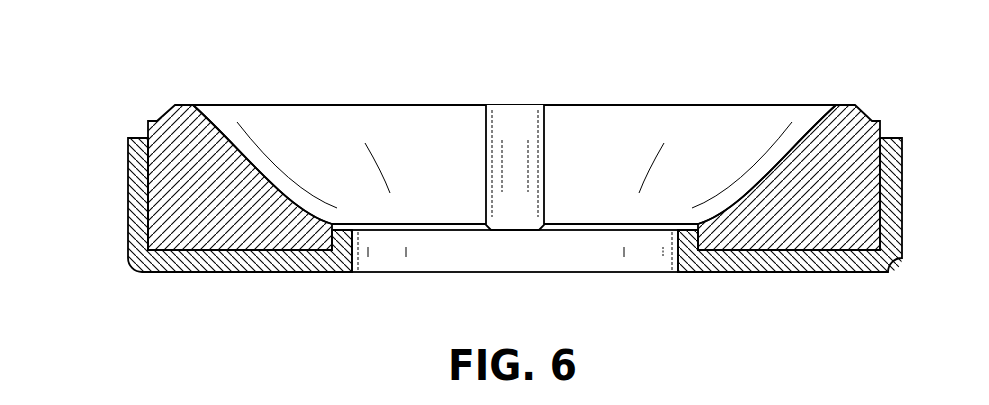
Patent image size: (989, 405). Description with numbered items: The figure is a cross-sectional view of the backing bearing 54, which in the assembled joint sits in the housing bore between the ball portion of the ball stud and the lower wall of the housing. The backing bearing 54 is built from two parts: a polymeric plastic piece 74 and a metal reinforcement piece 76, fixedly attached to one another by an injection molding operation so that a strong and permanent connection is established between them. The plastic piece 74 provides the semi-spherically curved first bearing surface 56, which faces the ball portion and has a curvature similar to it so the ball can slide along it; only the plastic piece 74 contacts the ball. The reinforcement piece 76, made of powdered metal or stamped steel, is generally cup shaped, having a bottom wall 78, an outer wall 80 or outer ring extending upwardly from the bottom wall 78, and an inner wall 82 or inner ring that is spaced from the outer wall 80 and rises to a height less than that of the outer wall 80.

The backing bearing 54 is at (495, 197).
The first bearing surface 56 is at (277, 173).
The plastic piece 74 is at (838, 172).
The reinforcement piece 76 is at (497, 247).
The bottom wall 78 is at (227, 262).
The outer wall 80 is at (133, 223).
The inner wall 82 is at (354, 243).